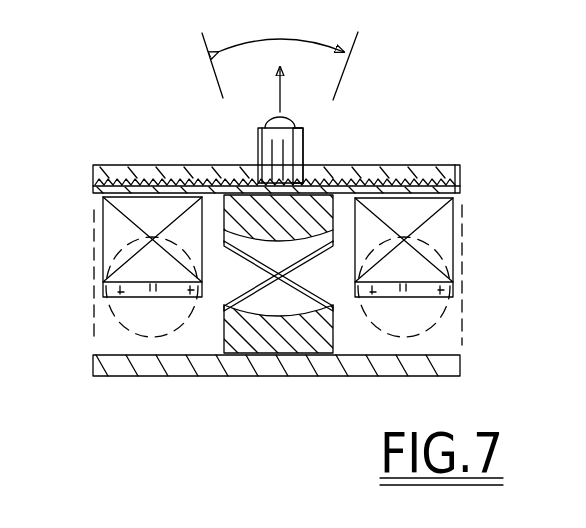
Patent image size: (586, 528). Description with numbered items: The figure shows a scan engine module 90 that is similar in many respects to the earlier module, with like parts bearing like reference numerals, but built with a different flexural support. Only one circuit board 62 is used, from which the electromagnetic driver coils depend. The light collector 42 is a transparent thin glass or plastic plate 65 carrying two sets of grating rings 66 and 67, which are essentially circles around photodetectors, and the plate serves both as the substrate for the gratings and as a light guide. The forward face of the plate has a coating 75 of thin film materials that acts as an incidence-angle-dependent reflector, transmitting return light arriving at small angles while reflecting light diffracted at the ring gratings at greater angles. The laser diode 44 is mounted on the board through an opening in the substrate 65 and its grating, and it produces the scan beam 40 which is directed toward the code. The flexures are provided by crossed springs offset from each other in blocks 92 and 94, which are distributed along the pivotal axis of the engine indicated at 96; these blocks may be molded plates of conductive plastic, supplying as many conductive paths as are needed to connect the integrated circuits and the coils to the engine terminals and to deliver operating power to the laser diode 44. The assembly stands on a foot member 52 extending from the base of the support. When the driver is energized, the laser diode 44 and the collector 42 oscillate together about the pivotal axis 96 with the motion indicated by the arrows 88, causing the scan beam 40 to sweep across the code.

The scan engine module 90 is at (96, 84).
The arrows 88 is at (264, 44).
The scan beam 40 is at (279, 99).
The light collector 42 is at (198, 164).
The coating 75 is at (362, 165).
The grating rings 67 is at (140, 182).
The grating rings 66 is at (423, 188).
The plate 65 is at (462, 176).
The circuit board 62 is at (460, 196).
The laser diode 44 is at (277, 153).
The block 94 is at (313, 221).
The pivotal axis 96 is at (281, 274).
The block 92 is at (333, 344).
The foot member 52 is at (462, 365).